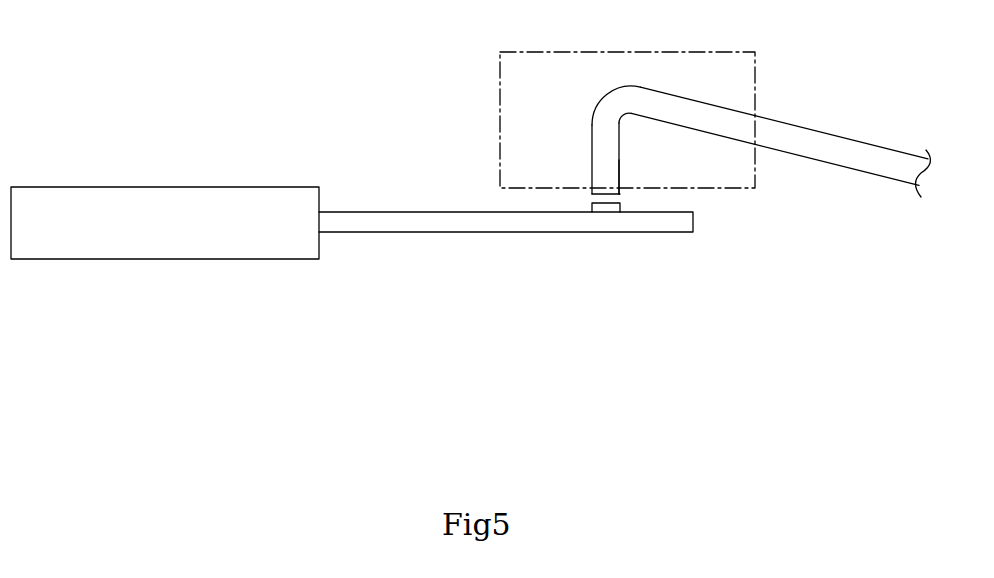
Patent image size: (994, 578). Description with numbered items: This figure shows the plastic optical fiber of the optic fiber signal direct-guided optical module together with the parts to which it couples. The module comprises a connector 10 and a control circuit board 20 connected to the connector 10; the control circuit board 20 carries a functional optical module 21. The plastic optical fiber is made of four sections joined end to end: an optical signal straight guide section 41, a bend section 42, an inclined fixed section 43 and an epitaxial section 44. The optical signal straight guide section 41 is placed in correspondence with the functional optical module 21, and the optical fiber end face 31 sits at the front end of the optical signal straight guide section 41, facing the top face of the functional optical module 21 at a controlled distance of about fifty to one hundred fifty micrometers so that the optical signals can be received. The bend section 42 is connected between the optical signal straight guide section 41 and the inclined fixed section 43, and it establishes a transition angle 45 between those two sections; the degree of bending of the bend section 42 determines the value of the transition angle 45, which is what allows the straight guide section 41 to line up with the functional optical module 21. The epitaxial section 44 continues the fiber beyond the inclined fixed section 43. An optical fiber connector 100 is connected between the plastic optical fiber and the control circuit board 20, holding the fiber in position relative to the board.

The main body / housing 10 is at (174, 249).
The flat plate / substrate 20 is at (532, 226).
The pad / contact portion on plate 21 is at (613, 208).
The foot / bottom end of elastic arm 31 is at (603, 194).
The elastic contact region 100 is at (518, 65).
The vertical section of elastic arm 41 is at (592, 133).
The bent section of elastic arm 42 is at (628, 82).
The inclined section of elastic arm 43 is at (644, 88).
The extended arm portion 44 is at (846, 147).
The inner corner / inner surface of bend 45 is at (698, 132).